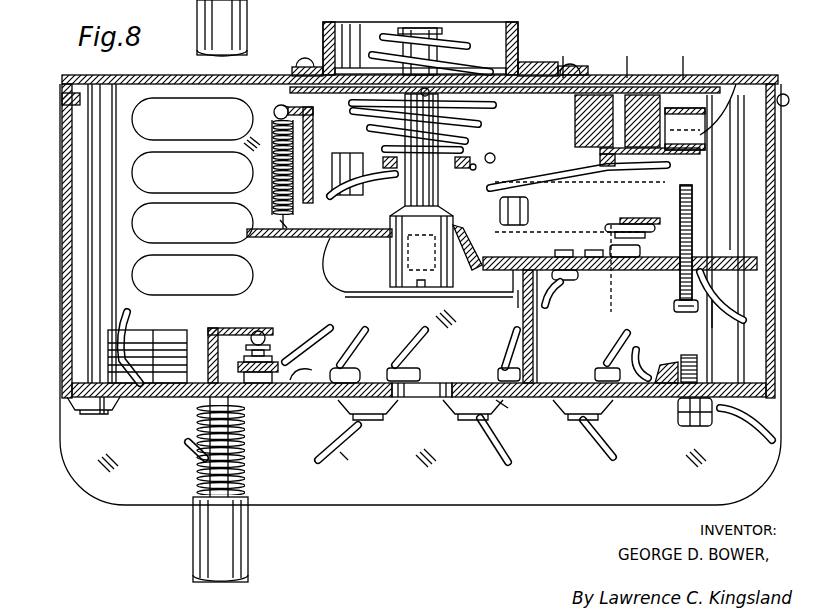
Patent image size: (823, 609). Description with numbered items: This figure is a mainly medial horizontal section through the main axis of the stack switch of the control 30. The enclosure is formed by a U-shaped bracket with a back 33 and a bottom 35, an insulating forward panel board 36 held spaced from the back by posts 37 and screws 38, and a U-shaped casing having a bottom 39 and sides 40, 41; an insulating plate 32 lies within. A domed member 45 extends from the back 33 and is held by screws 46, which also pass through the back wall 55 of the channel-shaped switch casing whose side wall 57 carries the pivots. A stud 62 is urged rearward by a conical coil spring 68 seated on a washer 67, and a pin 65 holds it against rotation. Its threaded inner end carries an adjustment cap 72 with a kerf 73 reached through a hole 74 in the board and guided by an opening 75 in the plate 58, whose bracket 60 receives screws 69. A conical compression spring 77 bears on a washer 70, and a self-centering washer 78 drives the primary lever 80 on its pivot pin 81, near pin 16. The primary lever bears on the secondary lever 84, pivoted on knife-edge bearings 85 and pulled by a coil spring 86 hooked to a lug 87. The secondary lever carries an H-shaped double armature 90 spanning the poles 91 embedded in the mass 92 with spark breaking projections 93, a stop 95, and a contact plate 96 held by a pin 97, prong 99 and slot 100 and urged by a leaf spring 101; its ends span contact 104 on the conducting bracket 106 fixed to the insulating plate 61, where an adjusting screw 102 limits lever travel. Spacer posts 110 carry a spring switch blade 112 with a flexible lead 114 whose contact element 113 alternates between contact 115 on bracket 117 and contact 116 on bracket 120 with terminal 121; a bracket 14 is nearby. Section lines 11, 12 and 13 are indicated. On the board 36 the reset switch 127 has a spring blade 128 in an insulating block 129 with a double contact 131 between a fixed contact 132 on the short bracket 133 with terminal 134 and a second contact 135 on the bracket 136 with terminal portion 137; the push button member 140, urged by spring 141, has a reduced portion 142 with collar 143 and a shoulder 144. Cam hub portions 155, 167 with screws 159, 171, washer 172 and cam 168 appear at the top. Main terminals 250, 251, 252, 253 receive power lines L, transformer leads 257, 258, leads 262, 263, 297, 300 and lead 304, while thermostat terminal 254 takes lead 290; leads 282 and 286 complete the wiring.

The switch assembly 30 is at (115, 545).
The bottom 35 is at (403, 505).
The casing bottom 39 is at (153, 92).
The insulating plate 32 is at (306, 45).
The casing side 40 is at (66, 280).
The casing side 41 is at (775, 320).
The posts 37 is at (95, 174).
The forward panel board 36 is at (72, 390).
The hole 74 is at (436, 398).
The domed member 45 is at (518, 33).
The screws 46 is at (534, 62).
The stud 62 is at (438, 28).
The conical coil spring 68 is at (393, 38).
The washer 67 is at (472, 68).
The push button member 140 is at (210, 18).
The forwardly projecting portion 155 is at (258, 0).
The screw 159 is at (292, 0).
The cam 168 is at (345, 0).
The washer 172 is at (533, 0).
The screw 171 is at (569, 0).
The projecting portion 167 is at (603, 0).
The section line 11 is at (572, 56).
The section line 12 is at (632, 56).
The section line 13 is at (688, 56).
The contact 104 is at (632, 100).
The slot 100 is at (627, 98).
The contact plate 96 is at (612, 95).
The mass 92 is at (590, 95).
The H-shaped double armature 90 is at (693, 108).
The poles 91 is at (736, 75).
The back 33 is at (762, 75).
The prong 99 is at (668, 167).
The bracket 14 is at (738, 165).
The pin 97 is at (700, 198).
The adjusting screw 102 is at (694, 210).
The conducting bracket 106 is at (700, 232).
The insulating plate 61 is at (775, 265).
The bracket 60 is at (533, 328).
The lead 262 is at (740, 302).
The screws 38 is at (95, 410).
The terminal portion 137 is at (115, 410).
The coil spring 86 is at (272, 137).
The knife-edge bearings 85 is at (272, 172).
The side wall 57 is at (280, 105).
The plate 58 is at (247, 233).
The back wall 55 is at (333, 93).
The primary lever 80 is at (342, 185).
The self-centering washer 78 is at (383, 162).
The pivot pin 81 is at (470, 162).
The pivot pin 16 is at (472, 156).
The pin 65 is at (386, 112).
The washer 70 is at (496, 106).
The conical compression spring 77 is at (480, 125).
The flexible lead 114 is at (410, 342).
The adjustment cap 72 is at (392, 290).
The main lead 257 is at (340, 300).
The kerf 73 is at (421, 287).
The opening 75 is at (450, 258).
The lug 87 is at (285, 270).
The secondary lever 84 is at (530, 185).
The stop 95 is at (600, 152).
The spacer posts 110 is at (520, 209).
The spring switch blade 112 is at (553, 206).
The leaf spring 101 is at (568, 188).
The spark breaking projections 93 is at (590, 188).
The bracket 117 is at (602, 219).
The contact 115 is at (642, 221).
The contact element 113 is at (630, 228).
The contact 116 is at (628, 251).
The bracket 120 is at (566, 280).
The terminal 121 is at (564, 302).
The lead 286 is at (555, 313).
The lead 263 is at (629, 337).
The lead 290 is at (651, 361).
The thermostat terminal 254 is at (680, 425).
The lead wire 304 is at (745, 425).
The lead 300 is at (603, 456).
The main high voltage terminal 253 is at (566, 425).
The lead 297 is at (500, 462).
The main high voltage terminal 252 is at (467, 424).
The screws 69 is at (508, 408).
The main high voltage terminal 251 is at (372, 418).
The main high voltage terminal 250 is at (322, 436).
The power lines L is at (195, 447).
The further reduced portion 142 is at (197, 433).
The shoulder 144 is at (200, 455).
The spring 141 is at (240, 450).
The lead 282 is at (130, 312).
The spring blade 128 is at (165, 340).
The insulating block 129 is at (140, 336).
The reset switch 127 is at (192, 340).
The collar 143 is at (200, 313).
The bracket 136 is at (240, 330).
The second contact 135 is at (275, 333).
The double contact 131 is at (322, 334).
The fixed contact 132 is at (305, 330).
The terminal 134 is at (358, 340).
The short bracket 133 is at (345, 370).
The lead 258 is at (421, 350).